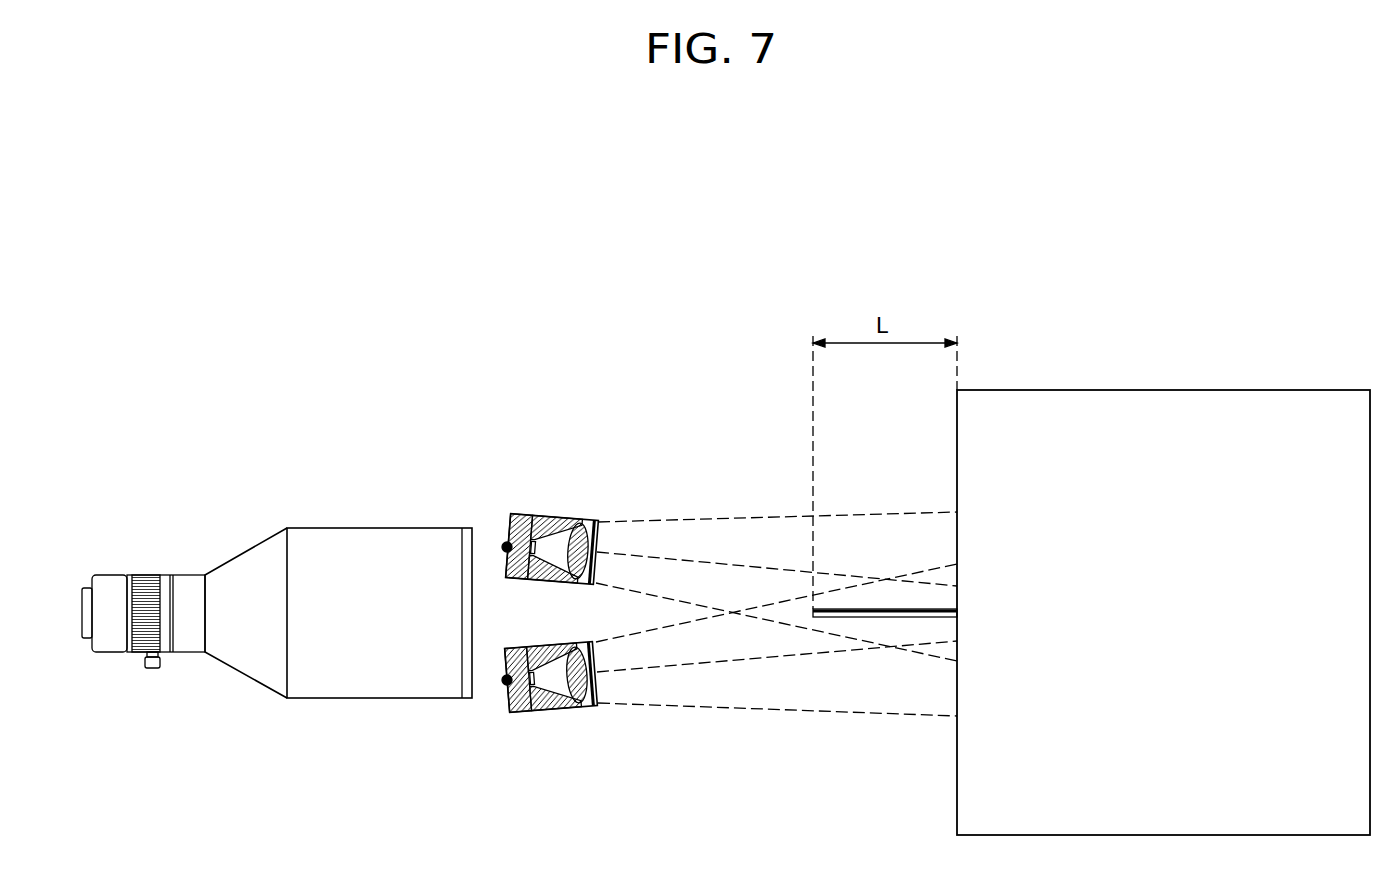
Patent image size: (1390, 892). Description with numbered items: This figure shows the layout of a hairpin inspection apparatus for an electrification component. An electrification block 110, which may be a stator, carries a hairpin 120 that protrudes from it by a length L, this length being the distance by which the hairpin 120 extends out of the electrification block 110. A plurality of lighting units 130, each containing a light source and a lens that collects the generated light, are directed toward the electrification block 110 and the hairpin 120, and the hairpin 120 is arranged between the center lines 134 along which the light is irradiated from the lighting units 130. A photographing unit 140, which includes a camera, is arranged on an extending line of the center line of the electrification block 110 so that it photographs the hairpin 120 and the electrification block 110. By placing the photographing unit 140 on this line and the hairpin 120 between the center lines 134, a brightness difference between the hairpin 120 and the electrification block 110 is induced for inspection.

The electrification block 110 is at (1182, 390).
The hairpin 120 is at (877, 618).
The lighting unit 130 is at (563, 612).
The center lines 134 is at (753, 567).
The photographing unit 140 is at (299, 518).